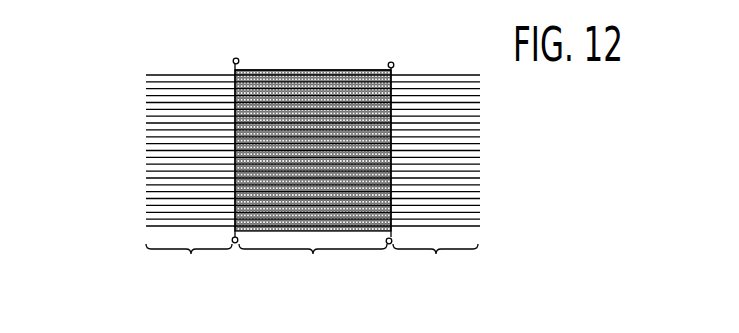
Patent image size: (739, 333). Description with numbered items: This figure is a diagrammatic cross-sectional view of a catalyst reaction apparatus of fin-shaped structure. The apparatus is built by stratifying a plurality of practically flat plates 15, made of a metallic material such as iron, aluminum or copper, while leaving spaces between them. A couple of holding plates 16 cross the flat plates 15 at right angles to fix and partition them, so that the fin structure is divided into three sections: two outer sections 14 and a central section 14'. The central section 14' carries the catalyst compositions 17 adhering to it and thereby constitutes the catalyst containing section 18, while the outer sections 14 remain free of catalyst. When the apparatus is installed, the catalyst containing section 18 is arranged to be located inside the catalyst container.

The partitioned fin structure sections 14 is at (312, 270).
The catalyst-carrying section of fin structure 14' is at (313, 270).
The flat plates 15 is at (138, 129).
The holding plate 16 is at (225, 53).
The catalyst compositions 17 is at (272, 73).
The catalyst containing section 18 is at (312, 62).